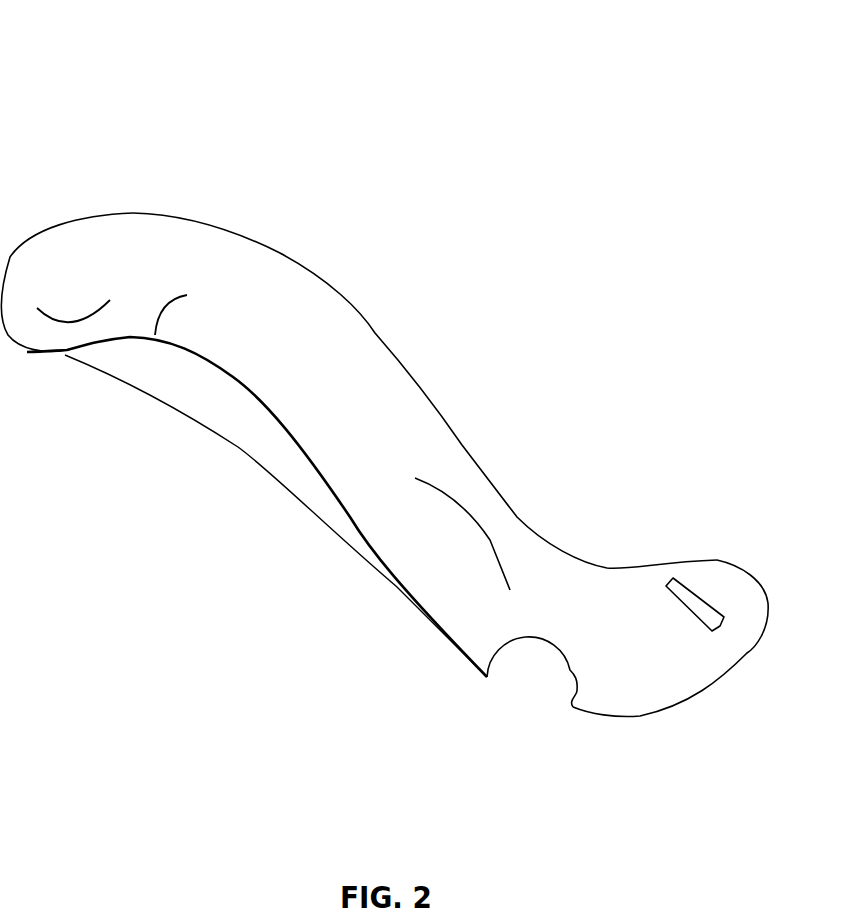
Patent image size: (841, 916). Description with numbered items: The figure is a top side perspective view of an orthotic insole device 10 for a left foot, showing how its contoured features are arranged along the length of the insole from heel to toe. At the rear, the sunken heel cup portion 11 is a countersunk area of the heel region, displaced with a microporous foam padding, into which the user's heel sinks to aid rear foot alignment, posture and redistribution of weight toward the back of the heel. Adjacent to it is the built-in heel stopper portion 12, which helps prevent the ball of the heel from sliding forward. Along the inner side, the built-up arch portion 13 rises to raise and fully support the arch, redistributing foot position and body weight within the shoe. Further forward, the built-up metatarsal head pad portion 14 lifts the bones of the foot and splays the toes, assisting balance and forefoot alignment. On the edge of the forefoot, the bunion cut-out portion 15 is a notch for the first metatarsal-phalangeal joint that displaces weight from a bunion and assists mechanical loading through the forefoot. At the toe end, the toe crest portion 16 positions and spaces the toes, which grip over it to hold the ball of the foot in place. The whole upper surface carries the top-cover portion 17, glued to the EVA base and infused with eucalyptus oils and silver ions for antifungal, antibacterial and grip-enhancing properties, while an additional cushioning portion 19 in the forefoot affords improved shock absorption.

The orthotic insole device 10 is at (122, 98).
The sunken heel cup portion 11 is at (65, 335).
The heel stopper portion 12 is at (173, 290).
The built-up arch portion 13 is at (239, 425).
The metatarsal head pad portion 14 is at (493, 517).
The bunion cut-out portion 15 is at (493, 692).
The toe crest portion 16 is at (678, 623).
The top-cover portion 17 is at (338, 333).
The additional cushioning portion 19 is at (615, 632).